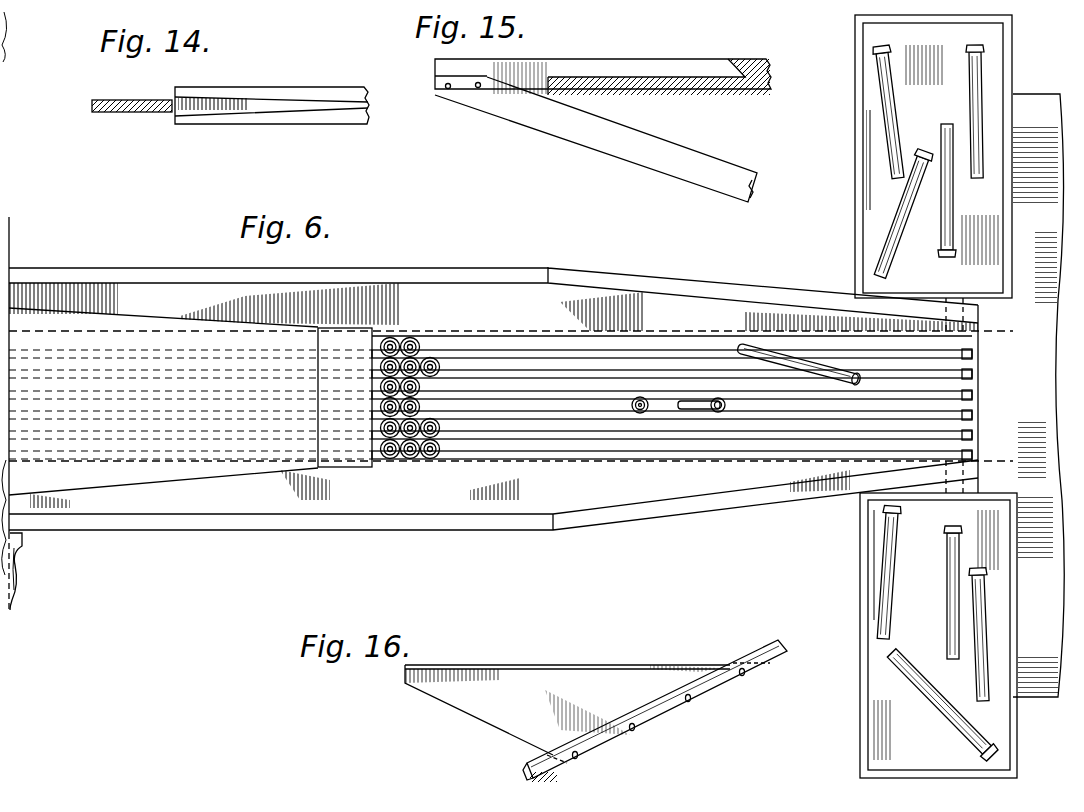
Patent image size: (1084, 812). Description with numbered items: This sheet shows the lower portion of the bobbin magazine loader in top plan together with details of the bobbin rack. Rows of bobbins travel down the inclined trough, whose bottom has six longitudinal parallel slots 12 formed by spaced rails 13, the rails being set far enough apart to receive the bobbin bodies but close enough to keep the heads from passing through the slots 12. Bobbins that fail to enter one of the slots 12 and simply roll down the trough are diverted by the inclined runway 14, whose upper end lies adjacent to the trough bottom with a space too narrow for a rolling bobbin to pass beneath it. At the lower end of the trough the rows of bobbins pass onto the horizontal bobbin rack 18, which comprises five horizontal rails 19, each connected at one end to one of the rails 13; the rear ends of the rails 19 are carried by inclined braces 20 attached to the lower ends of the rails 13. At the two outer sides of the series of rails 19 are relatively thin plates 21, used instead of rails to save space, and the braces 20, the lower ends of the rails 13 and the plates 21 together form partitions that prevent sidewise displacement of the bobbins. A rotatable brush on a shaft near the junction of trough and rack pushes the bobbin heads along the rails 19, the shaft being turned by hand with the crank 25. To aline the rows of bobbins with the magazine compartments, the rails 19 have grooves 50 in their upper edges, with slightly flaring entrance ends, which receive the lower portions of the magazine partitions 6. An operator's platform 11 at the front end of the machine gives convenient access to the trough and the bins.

In FIG. 14, the partition 6 is at (142, 113).
In FIG. 6, the operator's platform 11 is at (1030, 100).
In FIG. 6, the longitudinal parallel slot 12 is at (508, 390).
In FIG. 6, the rail 13 is at (452, 352).
In FIG. 16, the rail 13 is at (768, 642).
In FIG. 6, the inclined runway 14 is at (88, 318).
In FIG. 6, the bobbin rack 18 is at (1015, 404).
In FIG. 14, the horizontal rail 19 is at (329, 126).
In FIG. 15, the horizontal rail 19 is at (772, 70).
In FIG. 15, the inclined brace 20 is at (650, 160).
In FIG. 16, the plate 21 is at (572, 673).
In FIG. 6, the crank 25 is at (22, 592).
In FIG. 14, the groove 50 is at (349, 99).
In FIG. 15, the groove 50 is at (640, 62).